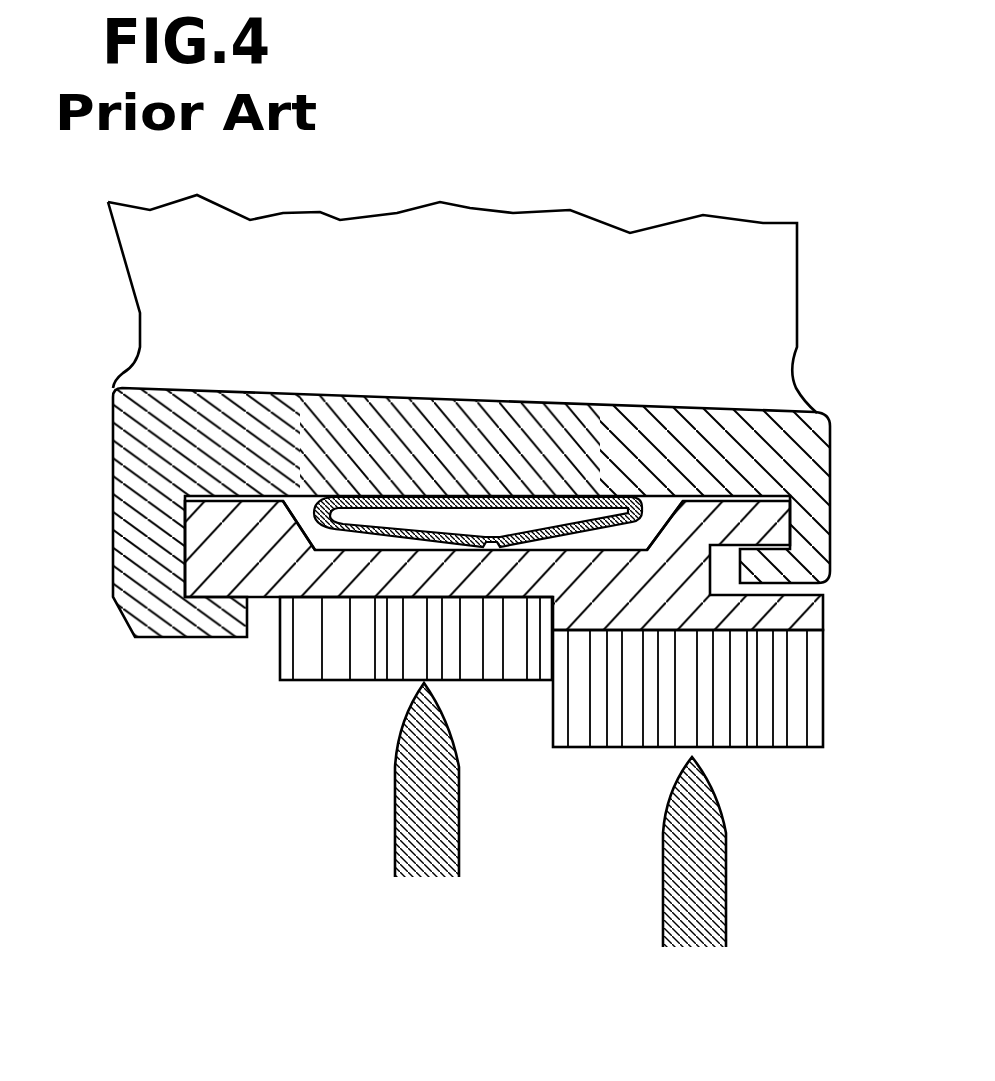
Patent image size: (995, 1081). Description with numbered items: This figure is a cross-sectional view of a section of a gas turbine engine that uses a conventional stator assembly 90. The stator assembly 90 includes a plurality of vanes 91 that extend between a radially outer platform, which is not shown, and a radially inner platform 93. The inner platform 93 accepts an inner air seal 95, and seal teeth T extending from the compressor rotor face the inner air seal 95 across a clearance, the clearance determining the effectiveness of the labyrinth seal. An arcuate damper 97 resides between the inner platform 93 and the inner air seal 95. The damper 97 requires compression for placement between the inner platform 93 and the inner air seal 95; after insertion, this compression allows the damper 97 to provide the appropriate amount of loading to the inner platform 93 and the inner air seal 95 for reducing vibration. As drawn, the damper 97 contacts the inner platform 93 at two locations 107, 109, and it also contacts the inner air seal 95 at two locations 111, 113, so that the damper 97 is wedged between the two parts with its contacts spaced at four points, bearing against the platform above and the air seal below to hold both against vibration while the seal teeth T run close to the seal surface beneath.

The stator assembly 90 is at (457, 600).
The vane 91 is at (497, 277).
The radially inner platform 93 is at (203, 388).
The inner air seal 95 is at (753, 739).
The arcuate damper 97 is at (474, 494).
The contact location 107 is at (325, 492).
The contact location 109 is at (622, 492).
The contact location 111 is at (465, 547).
The contact location 113 is at (504, 565).
The seal teeth T is at (665, 912).